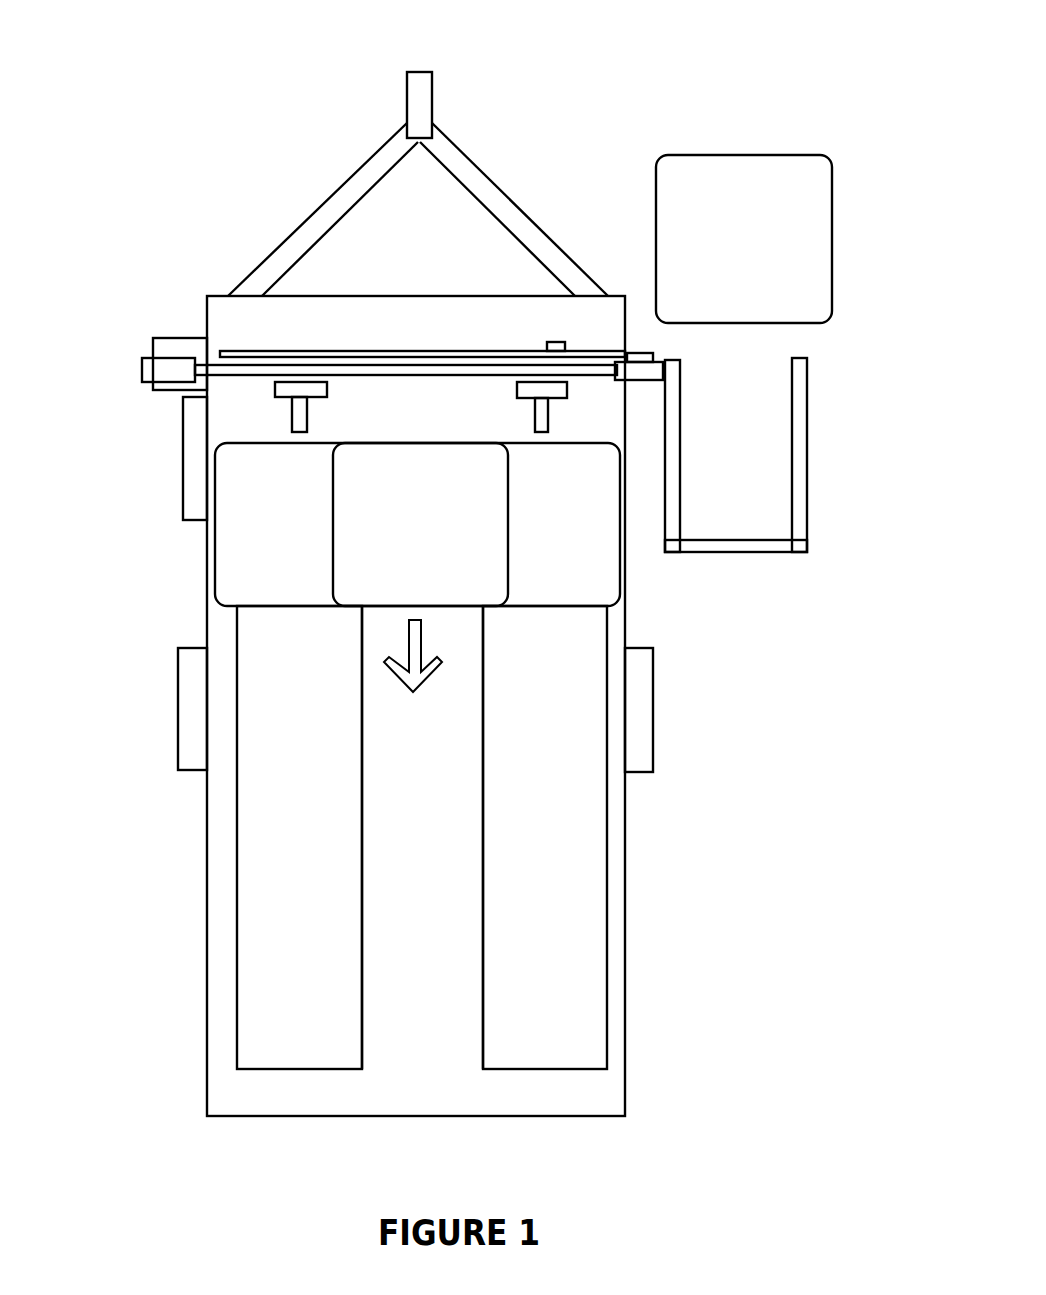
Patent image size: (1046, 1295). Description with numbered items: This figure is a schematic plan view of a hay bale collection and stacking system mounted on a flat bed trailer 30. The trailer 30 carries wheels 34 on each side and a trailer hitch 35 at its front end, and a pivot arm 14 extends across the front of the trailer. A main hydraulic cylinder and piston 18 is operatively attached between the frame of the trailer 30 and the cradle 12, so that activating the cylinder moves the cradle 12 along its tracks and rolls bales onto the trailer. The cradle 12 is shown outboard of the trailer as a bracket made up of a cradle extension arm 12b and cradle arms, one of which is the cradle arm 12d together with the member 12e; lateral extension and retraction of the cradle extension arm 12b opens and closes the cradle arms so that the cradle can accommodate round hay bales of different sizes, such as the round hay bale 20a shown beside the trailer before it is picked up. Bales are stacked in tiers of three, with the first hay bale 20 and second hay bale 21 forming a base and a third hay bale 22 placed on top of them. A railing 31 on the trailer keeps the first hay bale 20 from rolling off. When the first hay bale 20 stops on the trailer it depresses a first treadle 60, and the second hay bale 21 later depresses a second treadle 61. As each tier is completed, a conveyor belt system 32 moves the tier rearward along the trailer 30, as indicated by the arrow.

The cradle 12 is at (795, 527).
The cradle extension arm 12b is at (733, 547).
The cradle arm 12d is at (798, 488).
The bracket inner vertical member 12e is at (672, 477).
The pivot arm 14 is at (218, 357).
The main hydraulic cylinder and piston 18 is at (205, 390).
The first hay bale 20 is at (317, 524).
The round hay bale 20a is at (744, 239).
The second hay bale 21 is at (520, 524).
The third hay bale 22 is at (420, 524).
The flat bed trailer 30 is at (422, 837).
The railing 31 is at (193, 467).
The conveyor belt system 32 is at (422, 837).
The wheels 34 is at (190, 713).
The trailer hitch 35 is at (422, 85).
The first treadle 60 is at (305, 425).
The second treadle 61 is at (537, 416).